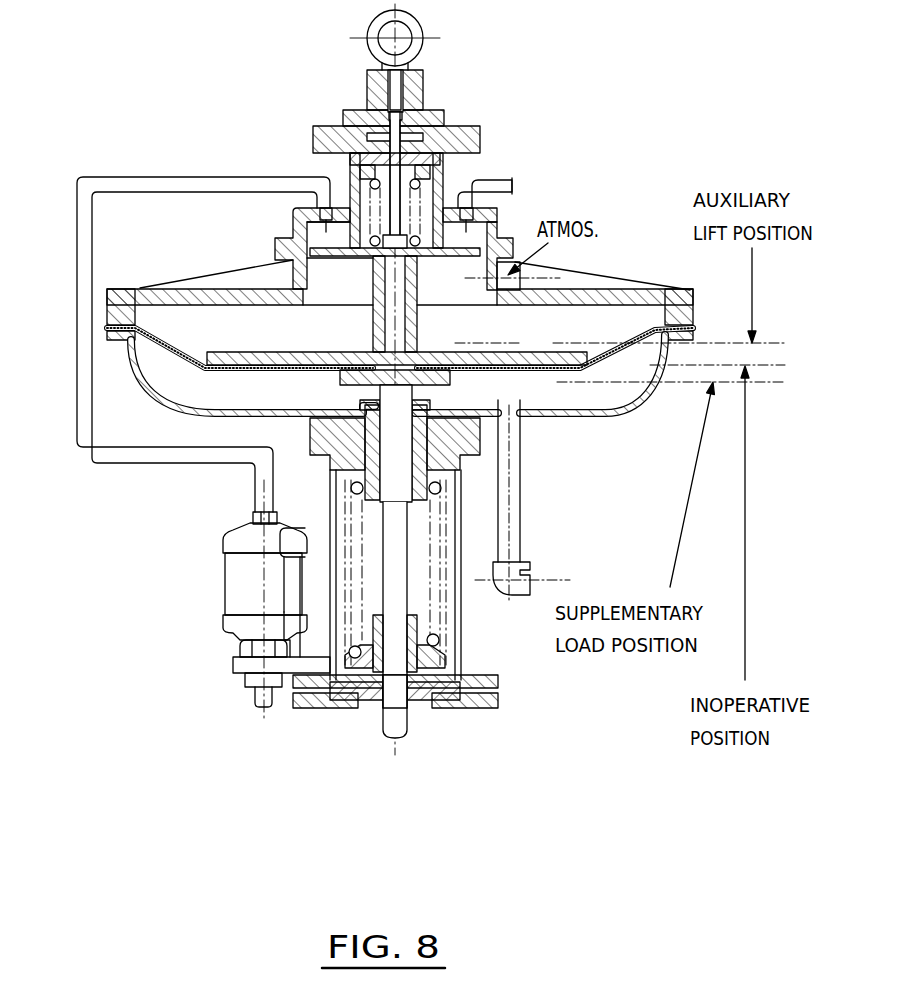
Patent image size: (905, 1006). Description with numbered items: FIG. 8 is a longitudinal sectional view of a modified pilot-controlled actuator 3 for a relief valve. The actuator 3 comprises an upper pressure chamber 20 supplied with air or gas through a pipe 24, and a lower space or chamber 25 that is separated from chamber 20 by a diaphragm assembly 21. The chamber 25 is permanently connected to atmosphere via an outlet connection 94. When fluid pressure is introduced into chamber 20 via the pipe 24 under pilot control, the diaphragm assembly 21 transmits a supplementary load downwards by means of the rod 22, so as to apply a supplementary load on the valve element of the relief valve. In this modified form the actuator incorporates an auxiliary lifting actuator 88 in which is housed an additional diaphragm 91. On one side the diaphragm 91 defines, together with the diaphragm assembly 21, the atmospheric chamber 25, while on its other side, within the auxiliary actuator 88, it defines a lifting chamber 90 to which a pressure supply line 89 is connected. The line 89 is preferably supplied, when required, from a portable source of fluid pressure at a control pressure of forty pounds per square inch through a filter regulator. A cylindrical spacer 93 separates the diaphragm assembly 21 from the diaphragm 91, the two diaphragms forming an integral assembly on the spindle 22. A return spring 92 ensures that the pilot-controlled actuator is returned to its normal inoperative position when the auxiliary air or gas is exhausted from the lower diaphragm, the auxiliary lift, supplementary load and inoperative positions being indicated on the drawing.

The actuator 3 is at (485, 238).
The upper pressure chamber 20 is at (480, 238).
The diaphragm assembly 21 is at (312, 258).
The rod 22 is at (400, 578).
The pipe 24 is at (492, 184).
The lower chamber 25 is at (597, 320).
The auxiliary lifting actuator 88 is at (616, 398).
The pressure supply line 89 is at (512, 528).
The lifting chamber 90 is at (558, 390).
The additional diaphragm 91 is at (498, 367).
The return spring 92 is at (415, 256).
The cylindrical spacer 93 is at (373, 335).
The outlet connection 94 is at (530, 277).